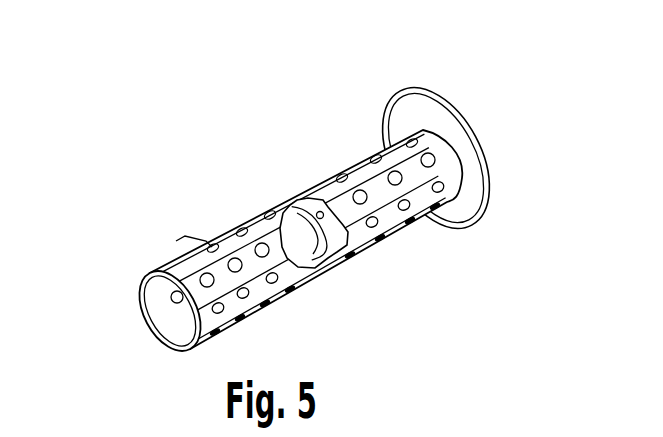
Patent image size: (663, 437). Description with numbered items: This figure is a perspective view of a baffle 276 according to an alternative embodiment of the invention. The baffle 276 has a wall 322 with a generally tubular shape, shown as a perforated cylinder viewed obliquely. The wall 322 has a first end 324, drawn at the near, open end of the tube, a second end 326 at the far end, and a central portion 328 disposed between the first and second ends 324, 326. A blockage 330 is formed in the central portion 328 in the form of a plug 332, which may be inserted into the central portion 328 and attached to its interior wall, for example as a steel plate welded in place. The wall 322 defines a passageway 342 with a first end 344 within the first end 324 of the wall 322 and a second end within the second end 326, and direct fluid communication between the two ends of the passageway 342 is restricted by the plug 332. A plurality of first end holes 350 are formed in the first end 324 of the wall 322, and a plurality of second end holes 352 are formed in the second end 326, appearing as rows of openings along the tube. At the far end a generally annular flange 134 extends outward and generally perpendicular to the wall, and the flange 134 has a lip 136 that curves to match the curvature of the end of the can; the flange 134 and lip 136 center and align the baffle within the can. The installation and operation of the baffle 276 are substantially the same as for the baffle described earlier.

The baffle 276 is at (262, 122).
The lip 136 is at (455, 110).
The flange 134 is at (471, 208).
The wall 322 is at (304, 315).
The first end 324 is at (202, 338).
The second end 326 is at (417, 207).
The central portion 328 is at (333, 198).
The blockage 330 is at (259, 184).
The plug 332 is at (312, 267).
The passageway 342 is at (169, 329).
The first end of the passageway 344 is at (163, 309).
The first end holes 350 is at (181, 254).
The second end holes 352 is at (375, 156).